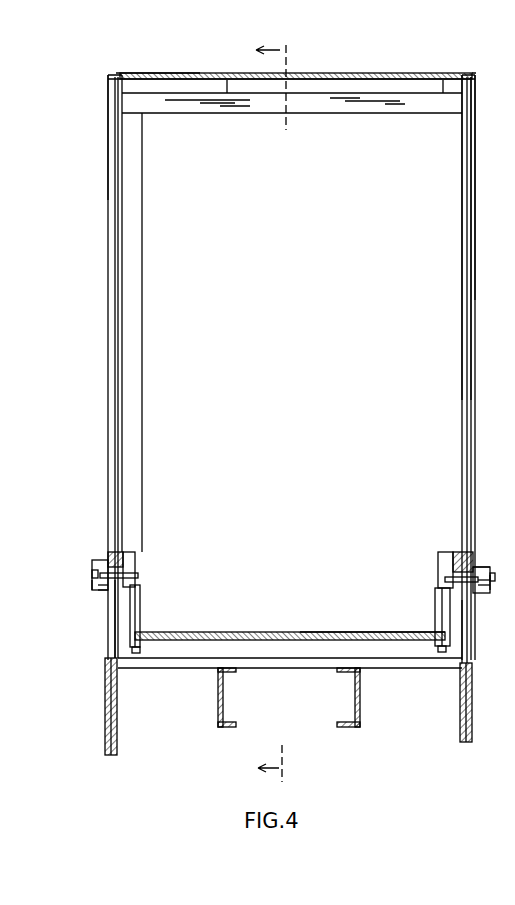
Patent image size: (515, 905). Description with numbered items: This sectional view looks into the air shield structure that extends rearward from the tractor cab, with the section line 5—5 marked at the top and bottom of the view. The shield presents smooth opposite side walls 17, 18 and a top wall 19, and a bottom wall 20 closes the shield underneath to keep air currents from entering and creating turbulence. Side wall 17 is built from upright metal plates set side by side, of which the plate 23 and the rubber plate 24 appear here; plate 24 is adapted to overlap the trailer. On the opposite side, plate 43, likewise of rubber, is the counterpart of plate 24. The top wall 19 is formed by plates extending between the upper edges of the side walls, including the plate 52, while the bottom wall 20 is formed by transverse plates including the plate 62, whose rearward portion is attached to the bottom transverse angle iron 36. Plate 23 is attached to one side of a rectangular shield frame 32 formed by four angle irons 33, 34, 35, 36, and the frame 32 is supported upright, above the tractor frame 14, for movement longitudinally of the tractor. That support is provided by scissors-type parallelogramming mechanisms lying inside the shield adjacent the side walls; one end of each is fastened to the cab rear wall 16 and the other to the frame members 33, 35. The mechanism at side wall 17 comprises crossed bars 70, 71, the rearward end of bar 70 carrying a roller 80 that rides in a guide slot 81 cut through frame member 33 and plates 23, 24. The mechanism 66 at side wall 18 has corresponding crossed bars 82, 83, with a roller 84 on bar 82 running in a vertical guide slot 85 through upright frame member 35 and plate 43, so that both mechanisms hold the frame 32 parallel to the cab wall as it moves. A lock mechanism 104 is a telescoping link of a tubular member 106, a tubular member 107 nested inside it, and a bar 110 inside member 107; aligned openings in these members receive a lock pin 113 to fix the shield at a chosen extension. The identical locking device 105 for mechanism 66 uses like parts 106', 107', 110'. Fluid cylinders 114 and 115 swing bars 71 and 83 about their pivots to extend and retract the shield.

The section line 5- 5 is at (260, 410).
The frame 14 is at (223, 692).
The rear wall 16 is at (304, 290).
The side wall 17 is at (101, 178).
The side wall 18 is at (475, 245).
The top wall 19 is at (386, 66).
The bottom wall 20 is at (274, 624).
The plate 23 is at (108, 318).
The plate 24 is at (118, 372).
The rectangular frame 32 is at (238, 125).
The angle iron 33 is at (142, 400).
The angle iron 34 is at (372, 116).
The angle iron 35 is at (460, 360).
The bottom transverse angle iron 36 is at (192, 642).
The plate 43 is at (472, 330).
The plate 52 is at (168, 74).
The plate 62 is at (345, 632).
The parallelogramming mechanism 66 is at (428, 583).
The crossed bar 70 is at (130, 554).
The crossed bar 71 is at (128, 571).
The roller 80 is at (108, 556).
The guide slot 81 is at (115, 635).
The crossed bar 82 is at (440, 565).
The crossed bar 83 is at (455, 553).
The roller 84 is at (470, 582).
The vertical guide slot 85 is at (462, 626).
The lock mechanism 104 is at (74, 598).
The locking device 105 is at (496, 588).
The tubular member 106 is at (70, 568).
The tubular member 106' is at (494, 531).
The tubular member 107 is at (66, 619).
The tubular member 107' is at (452, 650).
The bar 110 is at (85, 609).
The bar 110' is at (435, 643).
The lock pin 113 is at (92, 578).
The fluid cylinder 114 is at (140, 606).
The fluid cylinder 115 is at (426, 610).